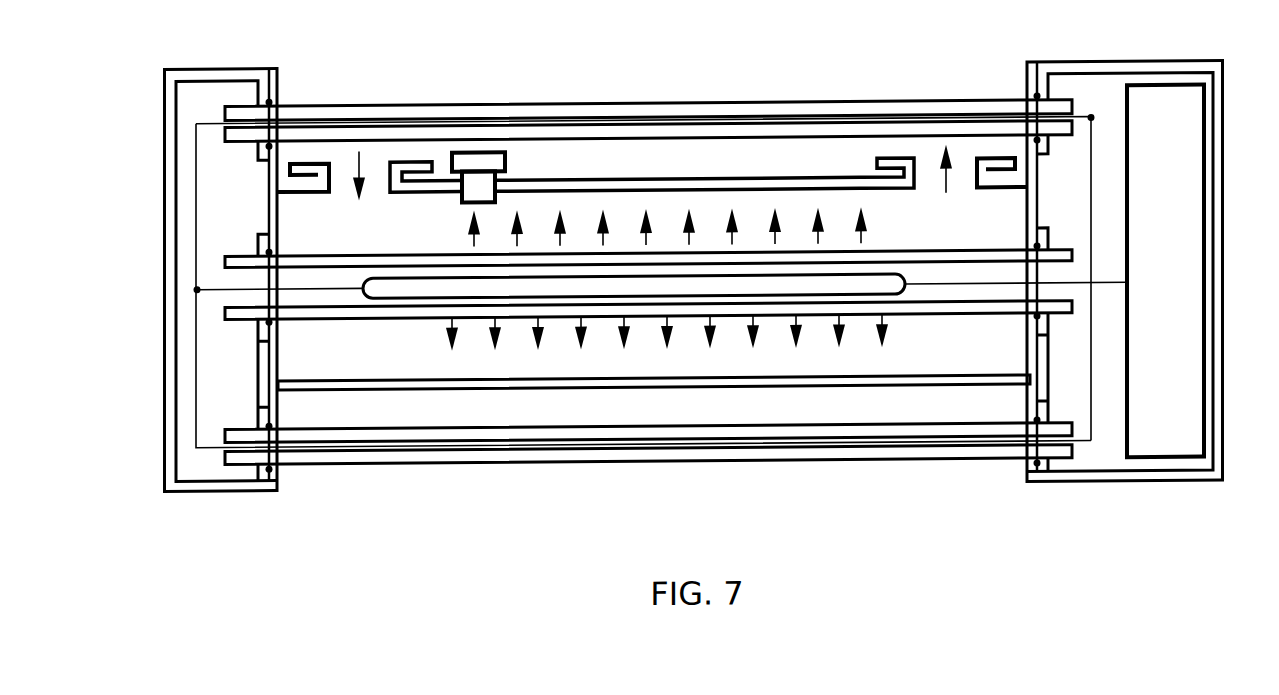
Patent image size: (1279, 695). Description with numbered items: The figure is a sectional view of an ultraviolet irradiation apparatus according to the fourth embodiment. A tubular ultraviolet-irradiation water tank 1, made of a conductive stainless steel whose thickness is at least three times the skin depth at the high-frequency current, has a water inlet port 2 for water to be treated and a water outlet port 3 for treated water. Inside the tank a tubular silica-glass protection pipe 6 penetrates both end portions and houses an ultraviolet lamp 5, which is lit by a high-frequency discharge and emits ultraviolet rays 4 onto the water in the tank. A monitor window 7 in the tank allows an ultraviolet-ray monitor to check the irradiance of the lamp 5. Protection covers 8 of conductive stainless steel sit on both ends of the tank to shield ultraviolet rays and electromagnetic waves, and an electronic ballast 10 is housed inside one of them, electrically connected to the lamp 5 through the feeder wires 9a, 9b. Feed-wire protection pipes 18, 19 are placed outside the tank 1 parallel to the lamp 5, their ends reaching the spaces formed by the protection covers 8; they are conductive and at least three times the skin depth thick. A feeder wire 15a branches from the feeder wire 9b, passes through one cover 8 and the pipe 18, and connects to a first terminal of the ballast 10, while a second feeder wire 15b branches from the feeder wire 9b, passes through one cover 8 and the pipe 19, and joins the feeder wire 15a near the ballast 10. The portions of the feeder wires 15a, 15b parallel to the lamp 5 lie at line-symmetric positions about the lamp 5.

The ultraviolet-irradiation water tank 1 is at (741, 183).
The water inlet port 2 is at (318, 165).
The water outlet port 3 is at (893, 164).
The ultraviolet rays 4 is at (870, 226).
The ultraviolet lamp 5 is at (668, 280).
The protection pipe 6 is at (800, 257).
The monitor window 7 is at (483, 155).
The protection cover 8 is at (219, 70).
The feeder wire 9a is at (1100, 291).
The feeder wire 9b is at (330, 292).
The electronic ballast 10 is at (1161, 466).
The feeder wire 15a is at (196, 368).
The second feeder wire 15b is at (196, 182).
The feed-wire protection pipe 18 is at (964, 466).
The feed-wire protection pipe 19 is at (995, 107).